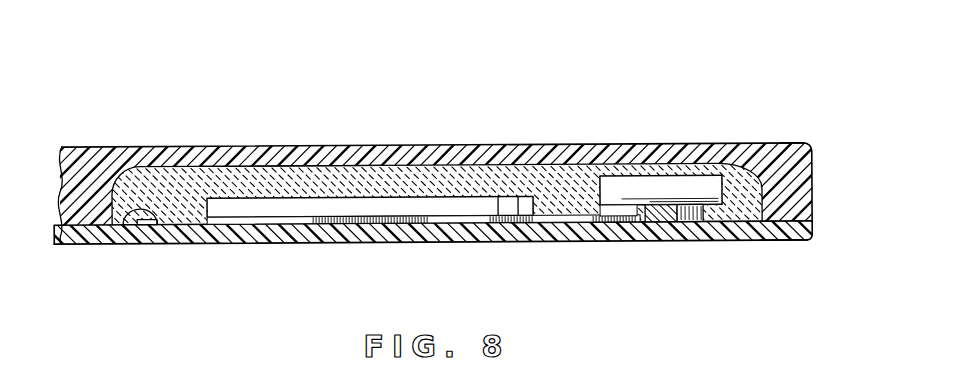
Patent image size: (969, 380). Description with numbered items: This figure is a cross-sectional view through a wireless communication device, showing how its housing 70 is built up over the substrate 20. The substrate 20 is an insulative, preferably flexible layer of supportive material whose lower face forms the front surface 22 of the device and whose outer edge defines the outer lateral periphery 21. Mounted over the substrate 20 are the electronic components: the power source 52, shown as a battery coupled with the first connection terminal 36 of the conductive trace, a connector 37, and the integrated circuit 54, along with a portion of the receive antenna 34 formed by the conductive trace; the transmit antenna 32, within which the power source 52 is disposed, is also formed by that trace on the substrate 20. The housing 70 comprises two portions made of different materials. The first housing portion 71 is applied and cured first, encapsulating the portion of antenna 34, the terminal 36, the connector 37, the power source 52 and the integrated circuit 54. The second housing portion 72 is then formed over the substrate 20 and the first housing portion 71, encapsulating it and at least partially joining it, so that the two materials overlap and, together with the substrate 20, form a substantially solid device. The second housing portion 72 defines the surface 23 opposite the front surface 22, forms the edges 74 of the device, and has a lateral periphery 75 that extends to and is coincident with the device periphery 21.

The substrate 20 is at (777, 243).
The outer lateral periphery 21 is at (813, 228).
The front surface 22 is at (513, 243).
The surface 23 is at (468, 146).
The transmit antenna 32 is at (125, 217).
The receive antenna 34 is at (687, 224).
The first connection terminal 36 is at (384, 220).
The connector 37 is at (651, 222).
The power source 52 is at (262, 205).
The integrated circuit 54 is at (655, 178).
The housing 70 is at (147, 125).
The first housing portion 71 is at (285, 150).
The second housing portion 72 is at (517, 145).
The edges 74 is at (812, 163).
The lateral periphery 75 is at (812, 200).